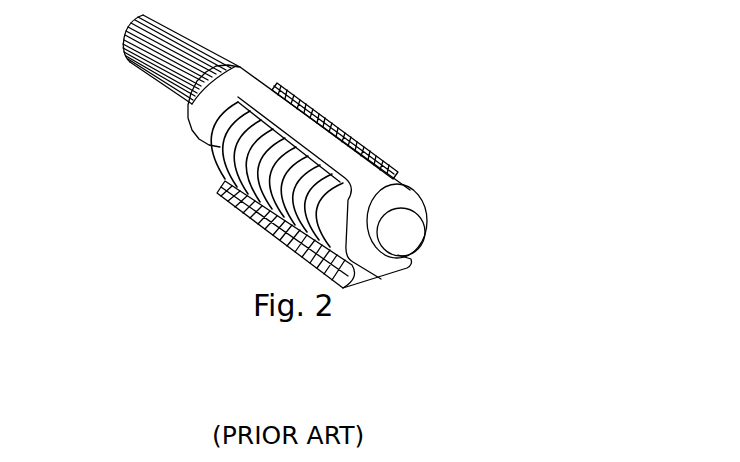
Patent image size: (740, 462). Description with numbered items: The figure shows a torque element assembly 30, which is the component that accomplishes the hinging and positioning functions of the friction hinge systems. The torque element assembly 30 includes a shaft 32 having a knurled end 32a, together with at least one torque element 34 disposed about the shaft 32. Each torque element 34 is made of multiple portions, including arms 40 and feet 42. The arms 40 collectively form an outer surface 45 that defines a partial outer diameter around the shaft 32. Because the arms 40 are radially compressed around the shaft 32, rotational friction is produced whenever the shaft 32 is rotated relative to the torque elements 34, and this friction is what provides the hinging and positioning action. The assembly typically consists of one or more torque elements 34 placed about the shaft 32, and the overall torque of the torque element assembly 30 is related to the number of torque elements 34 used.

The torque element assembly 30 is at (322, 74).
The shaft 32 is at (215, 88).
The knurled end 32a is at (128, 44).
The outer surface 45 is at (227, 138).
The arms 40 is at (343, 239).
The torque element 34 is at (238, 203).
The feet 42 is at (367, 267).